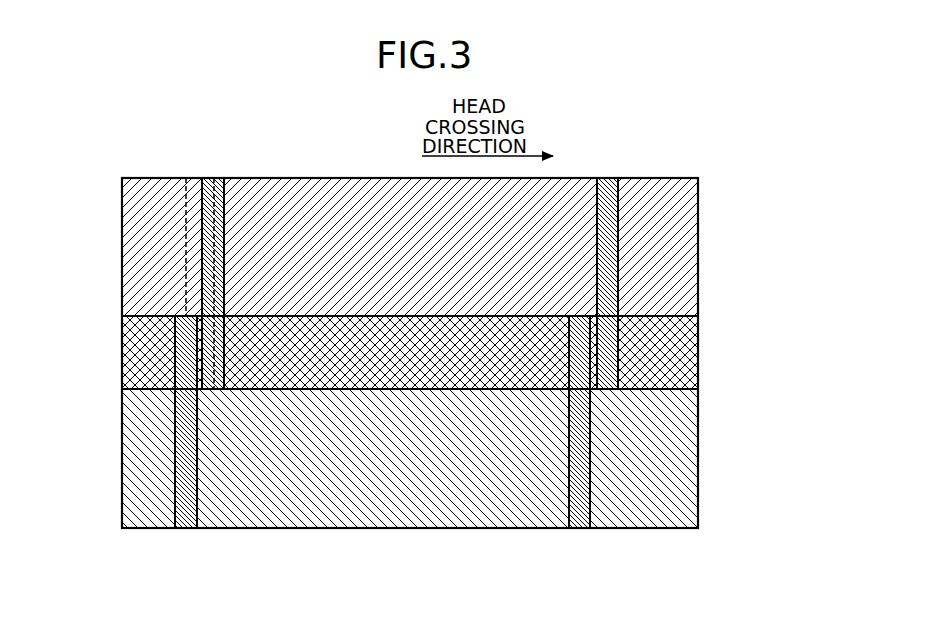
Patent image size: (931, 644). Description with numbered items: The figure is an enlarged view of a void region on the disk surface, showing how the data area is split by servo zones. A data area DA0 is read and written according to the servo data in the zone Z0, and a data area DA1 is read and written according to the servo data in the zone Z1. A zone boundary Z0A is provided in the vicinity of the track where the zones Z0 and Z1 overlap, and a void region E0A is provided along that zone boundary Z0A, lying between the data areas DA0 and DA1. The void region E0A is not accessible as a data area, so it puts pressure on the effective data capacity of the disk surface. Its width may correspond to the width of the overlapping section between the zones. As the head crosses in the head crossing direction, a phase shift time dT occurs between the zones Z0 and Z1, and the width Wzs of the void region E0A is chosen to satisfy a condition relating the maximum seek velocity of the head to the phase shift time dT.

The data area DA1 is at (149, 178).
The data area DA0 is at (149, 528).
The zone Z1 is at (208, 178).
The zone Z0 is at (183, 528).
The zone boundary Z0A is at (698, 353).
The void region E0A is at (698, 370).
The phase shift time dT is at (157, 238).
The width of the void region Wzs is at (257, 316).